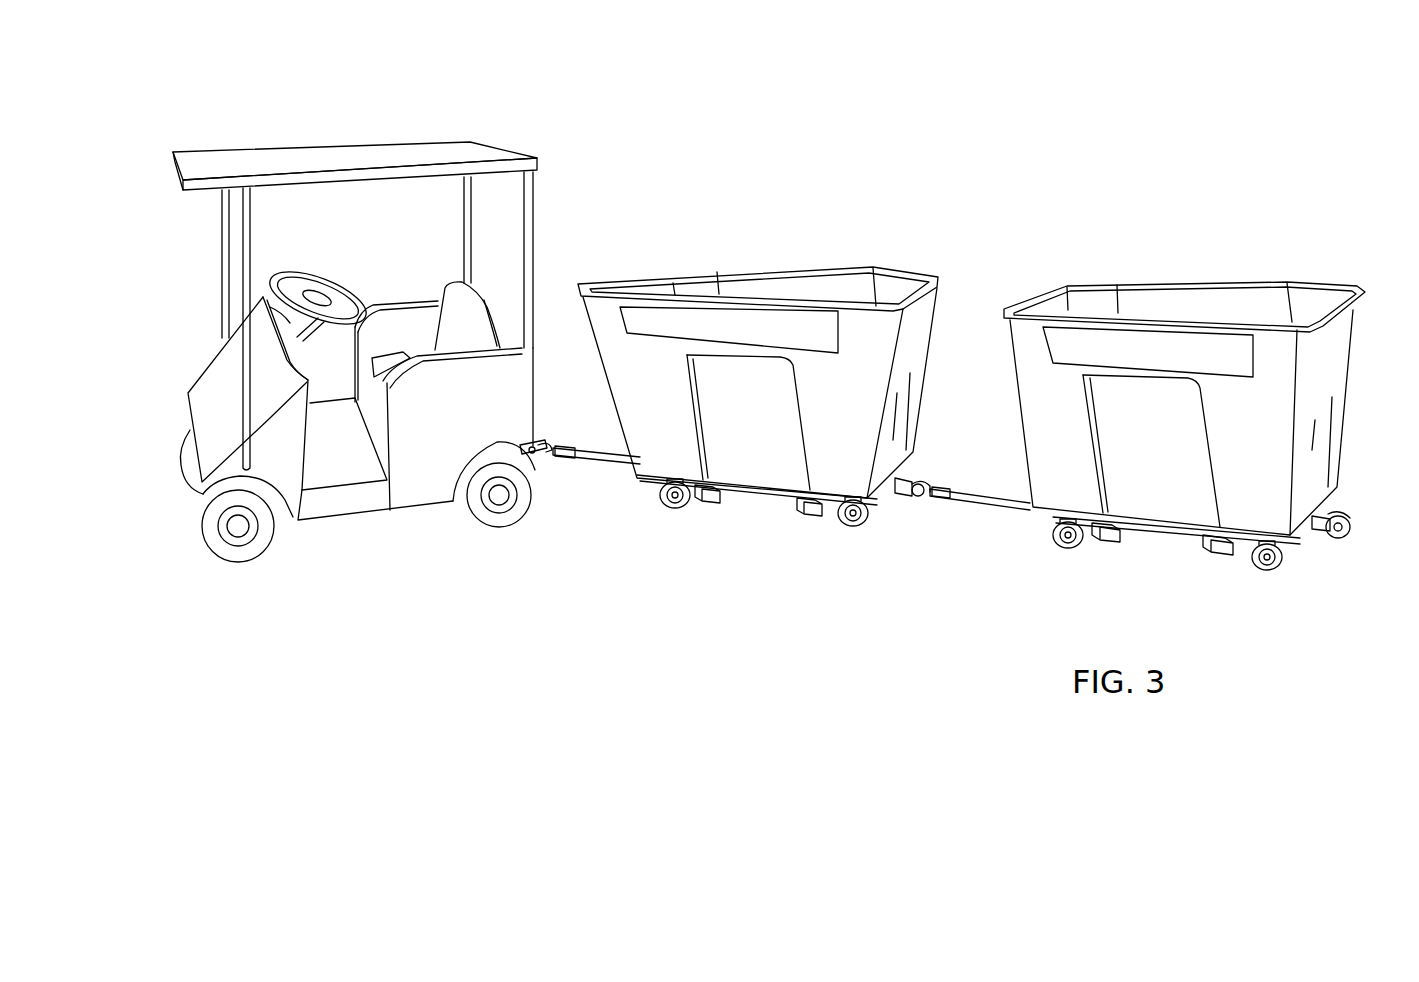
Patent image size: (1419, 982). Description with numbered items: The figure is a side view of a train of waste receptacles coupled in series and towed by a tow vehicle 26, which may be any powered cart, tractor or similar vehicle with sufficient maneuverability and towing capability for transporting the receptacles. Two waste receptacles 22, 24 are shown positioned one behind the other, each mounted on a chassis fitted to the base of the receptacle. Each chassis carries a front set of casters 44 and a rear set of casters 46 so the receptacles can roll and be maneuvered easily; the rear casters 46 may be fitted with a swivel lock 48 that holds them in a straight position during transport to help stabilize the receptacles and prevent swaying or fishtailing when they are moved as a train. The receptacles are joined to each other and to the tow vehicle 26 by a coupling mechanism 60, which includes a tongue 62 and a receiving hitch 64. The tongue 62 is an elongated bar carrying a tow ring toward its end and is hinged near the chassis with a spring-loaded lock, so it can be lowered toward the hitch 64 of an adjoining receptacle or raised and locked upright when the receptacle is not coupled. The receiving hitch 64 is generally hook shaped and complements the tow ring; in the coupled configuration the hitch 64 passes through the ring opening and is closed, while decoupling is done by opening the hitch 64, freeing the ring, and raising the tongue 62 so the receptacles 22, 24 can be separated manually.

The waste receptacle 22 is at (690, 239).
The waste receptacle 24 is at (1109, 252).
The tow vehicle 26 is at (402, 150).
The front set of casters 44 is at (673, 505).
The rear set of casters 46 is at (837, 527).
The swivel lock 48 is at (868, 523).
The coupling mechanism 60 is at (967, 537).
The tongue 62 is at (583, 447).
The receiving hitch 64 is at (922, 503).